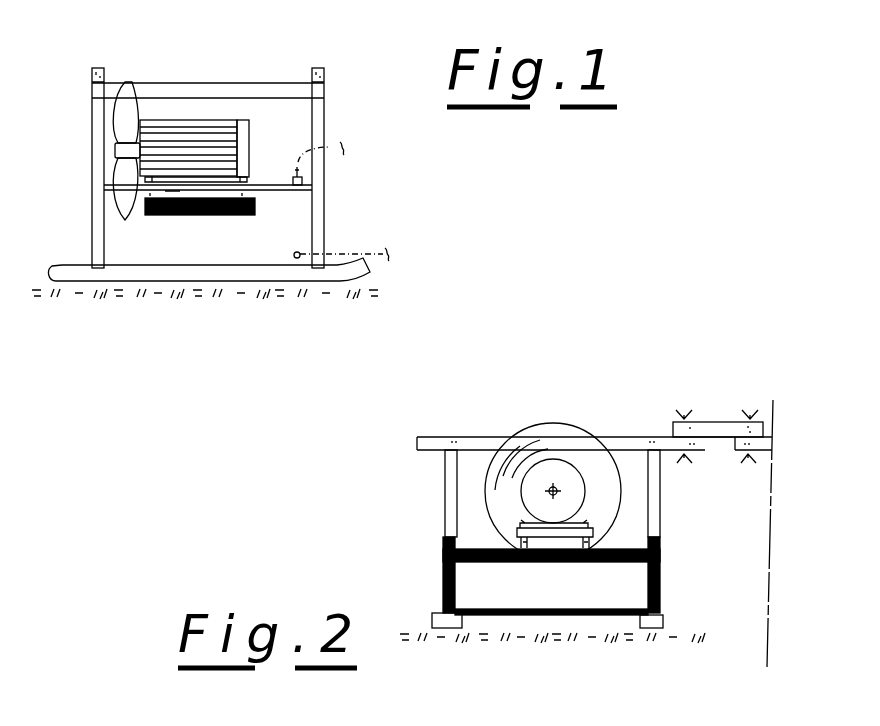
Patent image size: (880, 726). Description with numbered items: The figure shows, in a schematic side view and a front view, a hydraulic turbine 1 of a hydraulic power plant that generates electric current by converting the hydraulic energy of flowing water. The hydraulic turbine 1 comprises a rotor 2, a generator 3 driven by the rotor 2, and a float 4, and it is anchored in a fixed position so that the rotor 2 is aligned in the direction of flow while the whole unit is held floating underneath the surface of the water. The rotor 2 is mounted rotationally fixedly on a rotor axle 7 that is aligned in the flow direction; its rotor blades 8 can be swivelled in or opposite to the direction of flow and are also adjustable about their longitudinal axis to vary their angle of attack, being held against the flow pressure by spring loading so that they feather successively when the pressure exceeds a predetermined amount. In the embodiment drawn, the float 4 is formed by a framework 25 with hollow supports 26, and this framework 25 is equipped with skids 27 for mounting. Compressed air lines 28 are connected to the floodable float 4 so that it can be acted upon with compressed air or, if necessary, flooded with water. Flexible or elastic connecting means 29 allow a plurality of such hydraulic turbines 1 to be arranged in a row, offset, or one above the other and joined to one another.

In FIG. 1, the hydraulic turbine 1 is at (364, 50).
In FIG. 2, the hydraulic turbine 1 is at (596, 385).
In FIG. 1, the rotor 2 is at (105, 128).
In FIG. 2, the rotor 2 is at (609, 455).
In FIG. 1, the generator 3 is at (222, 153).
In FIG. 1, the float 4 is at (228, 220).
In FIG. 2, the float 4 is at (446, 482).
In FIG. 1, the rotor axle 7 is at (118, 147).
In FIG. 2, the rotor axle 7 is at (556, 490).
In FIG. 1, the rotor blades 8 is at (128, 107).
In FIG. 1, the framework 25 is at (327, 109).
In FIG. 2, the framework 25 is at (444, 552).
In FIG. 2, the hollow supports 26 is at (443, 583).
In FIG. 1, the skids 27 is at (102, 276).
In FIG. 2, the skids 27 is at (655, 628).
In FIG. 1, the compressed air lines 28 is at (352, 250).
In FIG. 2, the connecting means 29 is at (712, 423).